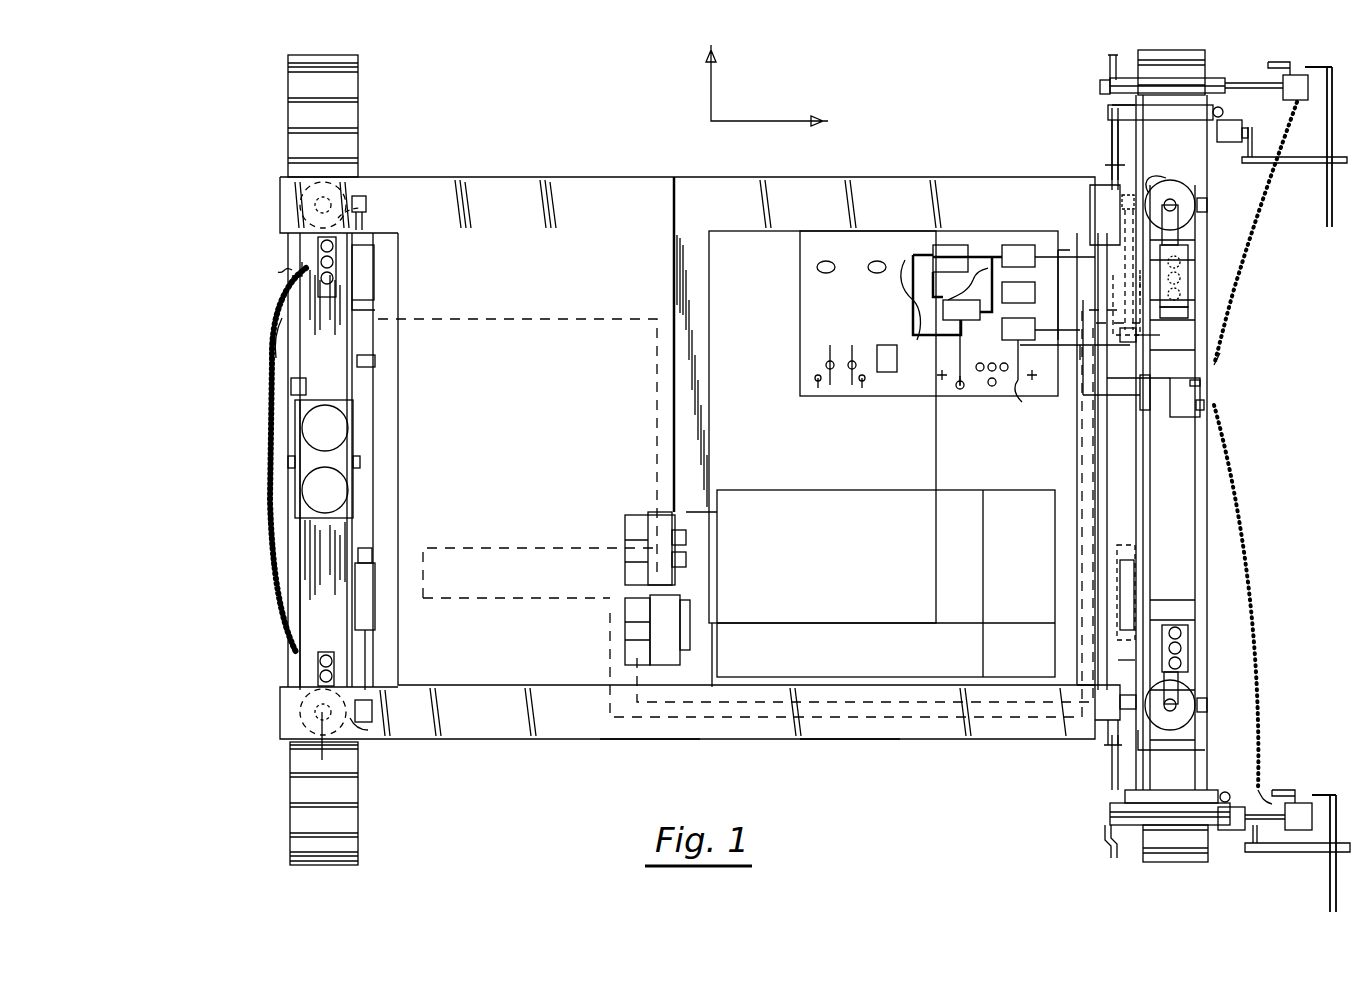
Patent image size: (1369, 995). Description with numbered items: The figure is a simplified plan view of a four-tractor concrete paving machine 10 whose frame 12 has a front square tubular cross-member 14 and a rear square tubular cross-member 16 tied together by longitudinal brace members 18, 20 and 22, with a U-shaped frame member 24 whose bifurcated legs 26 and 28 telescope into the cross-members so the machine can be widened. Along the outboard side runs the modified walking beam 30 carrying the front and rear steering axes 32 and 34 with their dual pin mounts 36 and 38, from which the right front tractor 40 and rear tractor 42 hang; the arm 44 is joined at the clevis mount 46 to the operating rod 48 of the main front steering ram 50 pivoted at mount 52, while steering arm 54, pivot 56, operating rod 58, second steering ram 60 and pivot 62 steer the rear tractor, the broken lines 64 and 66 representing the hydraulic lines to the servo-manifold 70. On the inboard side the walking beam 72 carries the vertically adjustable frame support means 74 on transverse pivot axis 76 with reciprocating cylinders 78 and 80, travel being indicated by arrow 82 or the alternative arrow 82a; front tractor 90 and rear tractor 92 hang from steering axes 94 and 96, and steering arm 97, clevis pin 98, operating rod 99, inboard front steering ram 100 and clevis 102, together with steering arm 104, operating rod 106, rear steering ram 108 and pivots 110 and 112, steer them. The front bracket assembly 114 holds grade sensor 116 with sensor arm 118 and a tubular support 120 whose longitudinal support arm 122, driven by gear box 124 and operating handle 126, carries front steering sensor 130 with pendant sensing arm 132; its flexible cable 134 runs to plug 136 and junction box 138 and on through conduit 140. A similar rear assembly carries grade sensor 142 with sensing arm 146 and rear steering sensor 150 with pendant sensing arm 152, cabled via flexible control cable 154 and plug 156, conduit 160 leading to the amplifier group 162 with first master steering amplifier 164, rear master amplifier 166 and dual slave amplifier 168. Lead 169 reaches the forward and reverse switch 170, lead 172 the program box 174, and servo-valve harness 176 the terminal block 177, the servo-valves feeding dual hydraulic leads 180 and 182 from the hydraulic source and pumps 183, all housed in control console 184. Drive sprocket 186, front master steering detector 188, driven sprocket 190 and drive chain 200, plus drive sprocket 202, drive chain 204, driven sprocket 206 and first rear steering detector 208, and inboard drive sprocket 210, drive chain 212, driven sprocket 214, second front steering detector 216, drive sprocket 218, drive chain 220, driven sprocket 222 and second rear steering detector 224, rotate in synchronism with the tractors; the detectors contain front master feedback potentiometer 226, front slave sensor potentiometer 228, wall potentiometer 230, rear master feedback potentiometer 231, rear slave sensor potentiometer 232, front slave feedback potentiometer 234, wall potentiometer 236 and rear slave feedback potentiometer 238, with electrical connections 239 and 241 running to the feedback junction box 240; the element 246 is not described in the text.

The machine 10 is at (735, 742).
The frame 12 is at (828, 742).
The front square tubular cross-member 14 is at (655, 165).
The rear square tubular cross-member 16 is at (648, 742).
The longitudinal brace member 18 is at (1092, 281).
The longitudinal brace member 20 is at (700, 288).
The longitudinal brace member 22 is at (378, 302).
The U-shaped frame member 24 is at (1120, 475).
The bifurcated leg 26 is at (1110, 185).
The bifurcated leg 28 is at (1100, 745).
The modified walking beam 30 is at (1200, 500).
The front steering axis 32 is at (1190, 196).
The rear steering axis 34 is at (1195, 715).
The dual pin mount 36 is at (1208, 205).
The dual pin mount 38 is at (1207, 708).
The right front tractor 40 is at (1175, 52).
The rear tractor 42 is at (1185, 840).
The inwardly directed arm 44 is at (1122, 200).
The end pivot or clevis mount 46 is at (1125, 208).
The operating rod 48 is at (1118, 255).
The main front steering ram 50 is at (1143, 277).
The pivot or clevis mount 52 is at (1150, 335).
The inwardly directed steering arm 54 is at (1147, 740).
The pivot 56 is at (1120, 700).
The operating rod 58 is at (1117, 656).
The second steering ram 60 is at (1122, 604).
The pivot 62 is at (1128, 545).
The broken line (dual hydraulic lead) 64 is at (1068, 452).
The broken line (two-way hydraulic line) 66 is at (1090, 532).
The servo-manifold 70 is at (628, 512).
The walking beam 72 is at (295, 542).
The vertically adjustable frame support means 74 is at (296, 470).
The transverse pivot axis 76 is at (296, 454).
The reciprocating cylinder 78 is at (303, 428).
The reciprocating cylinder 80 is at (306, 490).
The arrow 82 is at (711, 110).
The arrow 82a is at (760, 115).
The front tractor 90 is at (360, 118).
The rear tractor 92 is at (360, 845).
The front steering axis (front steering mount) 94 is at (345, 190).
The rear steering axis 96 is at (300, 708).
The inwardly directed steering arm 97 is at (366, 200).
The clevis pin 98 is at (365, 213).
The operating rod 99 is at (375, 262).
The inboard front steering ram 100 is at (378, 300).
The pivot or clevis 102 is at (375, 362).
The steering arm 104 is at (368, 728).
The operating rod 106 is at (377, 663).
The rear steering ram 108 is at (377, 616).
The pivot 110 is at (372, 708).
The pivot 112 is at (372, 556).
The front bracket assembly (suspension assembly) 114 is at (1108, 779).
The grade sensor 116 is at (1230, 125).
The sensor arm 118 is at (1349, 130).
The tubular support 120 is at (1218, 78).
The longitudinal support arm 122 is at (1262, 872).
The gear box 124 is at (1106, 853).
The operating handle 126 is at (1110, 818).
The front steering sensor 130 is at (1300, 70).
The pendant sensing arm 132 is at (1345, 85).
The flexible cable 134 is at (1238, 312).
The plug 136 is at (1200, 392).
The junction box 138 is at (1150, 400).
The protecting flexible conduit 140 is at (1066, 238).
The grade sensor 142 is at (1235, 830).
The sensing arm 146 is at (1300, 852).
The rear steering sensor 150 is at (1305, 795).
The pendant sensing arm 152 is at (1334, 912).
The flexible control cable 154 is at (1270, 775).
The plug 156 is at (1204, 415).
The electrical conduit 160 is at (1100, 420).
The amplifier group 162 is at (1026, 220).
The first master steering amplifier 164 is at (1000, 218).
The rear master amplifier 166 is at (1012, 400).
The front and rear dual slave amplifier 168 is at (947, 244).
The lead 169 is at (966, 297).
The forward and reverse switch 170 is at (968, 400).
The lead 172 is at (912, 325).
The program box 174 is at (960, 248).
The servo-valve harness 176 is at (936, 435).
The terminal block 177 is at (676, 630).
The dual hydraulic lead 180 is at (546, 318).
The dual hydraulic lead 182 is at (518, 552).
The source of hydraulic oil and pumps 183 is at (886, 583).
The control console 184 is at (853, 398).
The drive sprocket 186 is at (1176, 203).
The front master steering detector 188 is at (1165, 318).
The driven sprocket 190 is at (1180, 252).
The drive chain 200 is at (1164, 173).
The drive sprocket 202 is at (1176, 708).
The drive chain 204 is at (1178, 685).
The driven sprocket 206 is at (1181, 663).
The first rear steering detector 208 is at (1180, 625).
The drive sprocket 210 is at (318, 203).
The drive chain 212 is at (355, 225).
The driven sprocket 214 is at (318, 240).
The second front steering detector 216 is at (286, 294).
The drive sprocket 218 is at (330, 720).
The drive chain 220 is at (320, 712).
The driven sprocket 222 is at (320, 676).
The second rear steering detector 224 is at (318, 654).
The front master feedback potentiometer 226 is at (1180, 262).
The front slave sensor potentiometer 228 is at (1180, 278).
The wall potentiometer 230 is at (1180, 294).
The rear master feedback potentiometer 231 is at (1181, 648).
The rear slave sensor potentiometer 232 is at (1181, 633).
The front slave feedback potentiometer 234 is at (320, 253).
The wall potentiometer 236 is at (320, 275).
The rear slave feedback potentiometer 238 is at (320, 662).
The electrical connection 239 is at (262, 340).
The feedback junction box 240 is at (298, 386).
The electrical connection 241 is at (270, 520).
The tab 246 is at (1200, 383).